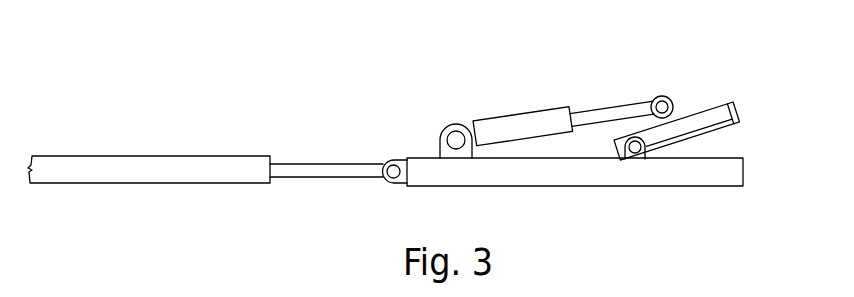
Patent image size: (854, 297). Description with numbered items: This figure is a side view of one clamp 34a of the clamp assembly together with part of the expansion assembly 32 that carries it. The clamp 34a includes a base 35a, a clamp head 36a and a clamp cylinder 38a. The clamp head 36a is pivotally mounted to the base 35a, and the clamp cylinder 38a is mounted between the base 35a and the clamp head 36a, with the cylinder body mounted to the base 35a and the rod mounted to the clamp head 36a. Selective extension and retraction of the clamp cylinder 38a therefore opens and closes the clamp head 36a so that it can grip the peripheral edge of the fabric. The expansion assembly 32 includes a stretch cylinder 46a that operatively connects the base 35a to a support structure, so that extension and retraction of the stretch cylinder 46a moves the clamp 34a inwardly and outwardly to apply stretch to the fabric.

The expansion assembly 32 is at (217, 158).
The stretch cylinder 46a is at (188, 187).
The base 35a is at (587, 178).
The clamp 34a is at (612, 93).
The clamp cylinder 38a is at (518, 117).
The clamp head 36a is at (733, 110).